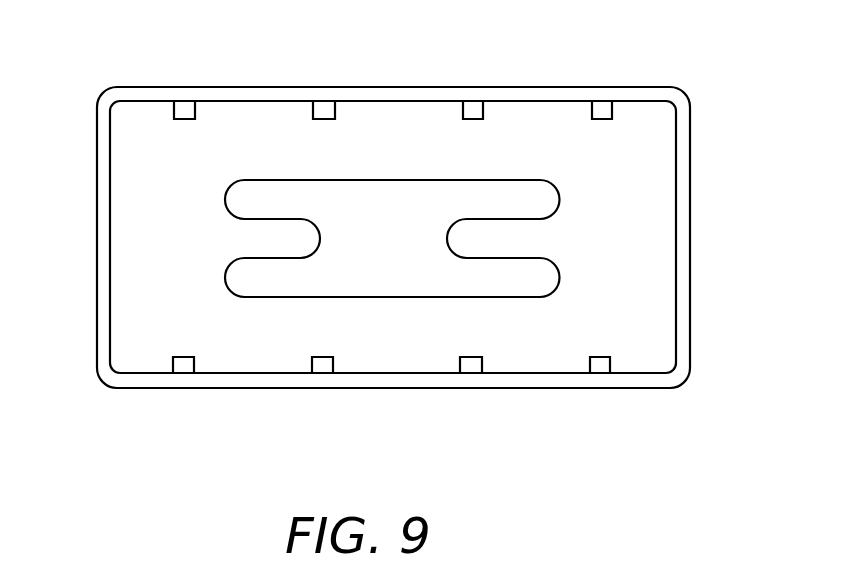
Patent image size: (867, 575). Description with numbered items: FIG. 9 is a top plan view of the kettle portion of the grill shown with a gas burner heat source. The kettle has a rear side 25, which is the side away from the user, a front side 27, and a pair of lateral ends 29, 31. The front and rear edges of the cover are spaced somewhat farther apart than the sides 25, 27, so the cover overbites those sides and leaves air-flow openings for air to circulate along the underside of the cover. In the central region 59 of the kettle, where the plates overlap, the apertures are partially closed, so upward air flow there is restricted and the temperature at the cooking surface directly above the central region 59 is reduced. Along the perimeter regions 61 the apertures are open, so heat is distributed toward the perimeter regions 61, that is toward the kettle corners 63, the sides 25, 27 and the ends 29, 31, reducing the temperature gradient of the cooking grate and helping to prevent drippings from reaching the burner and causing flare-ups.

The rear side 25 is at (365, 93).
The front side 27 is at (405, 385).
The lateral end 29 is at (100, 220).
The lateral end 31 is at (690, 245).
The central region 59 is at (265, 232).
The perimeter region 61 is at (235, 137).
The kettle corner 63 is at (652, 125).